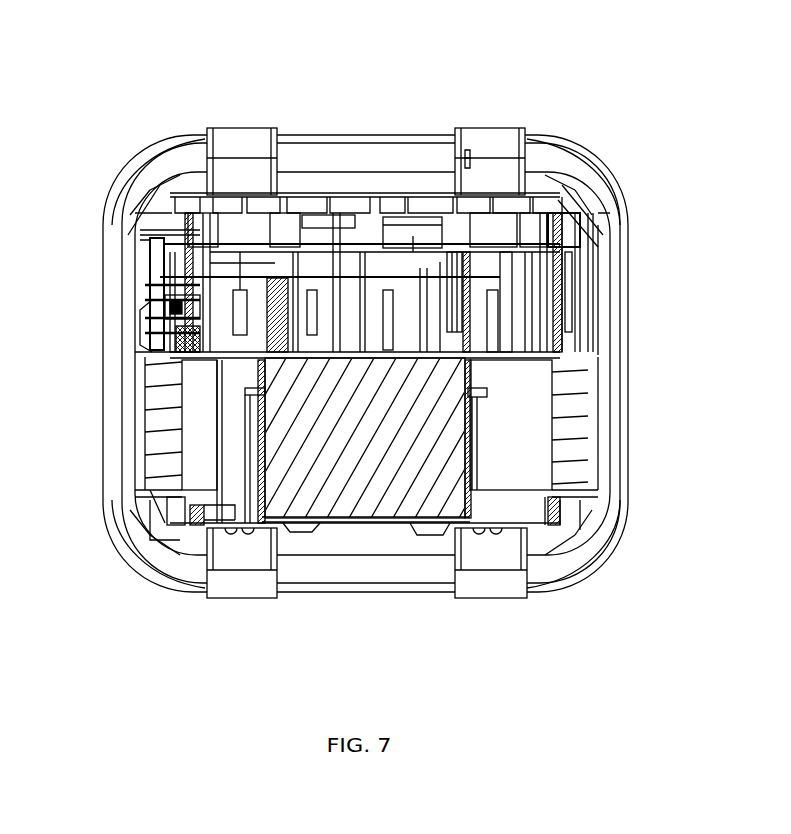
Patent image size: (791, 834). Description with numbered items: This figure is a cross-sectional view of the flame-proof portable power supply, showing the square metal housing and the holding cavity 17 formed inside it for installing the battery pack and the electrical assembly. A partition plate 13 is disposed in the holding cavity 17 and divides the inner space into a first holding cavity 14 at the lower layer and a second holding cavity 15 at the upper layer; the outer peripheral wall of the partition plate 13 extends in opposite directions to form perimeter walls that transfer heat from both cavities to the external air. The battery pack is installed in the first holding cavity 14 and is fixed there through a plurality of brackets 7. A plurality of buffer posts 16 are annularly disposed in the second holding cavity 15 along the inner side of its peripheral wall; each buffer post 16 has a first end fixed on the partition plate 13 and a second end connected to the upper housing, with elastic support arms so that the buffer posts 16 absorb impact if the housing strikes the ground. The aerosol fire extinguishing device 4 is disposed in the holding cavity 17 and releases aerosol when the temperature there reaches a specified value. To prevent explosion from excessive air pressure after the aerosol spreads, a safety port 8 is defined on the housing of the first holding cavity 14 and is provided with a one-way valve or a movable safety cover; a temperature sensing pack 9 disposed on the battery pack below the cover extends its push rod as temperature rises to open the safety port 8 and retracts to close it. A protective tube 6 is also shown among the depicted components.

The aerosol fire extinguishing device 4 is at (378, 358).
The protective tube 6 is at (410, 160).
The bracket 7 is at (493, 147).
The safety port 8 is at (213, 518).
The temperature sensing pack 9 is at (217, 418).
The partition plate 13 is at (325, 355).
The first holding cavity 14 is at (513, 422).
The second holding cavity 15 is at (513, 296).
The buffer post 16 is at (563, 277).
The holding cavity 17 is at (720, 262).